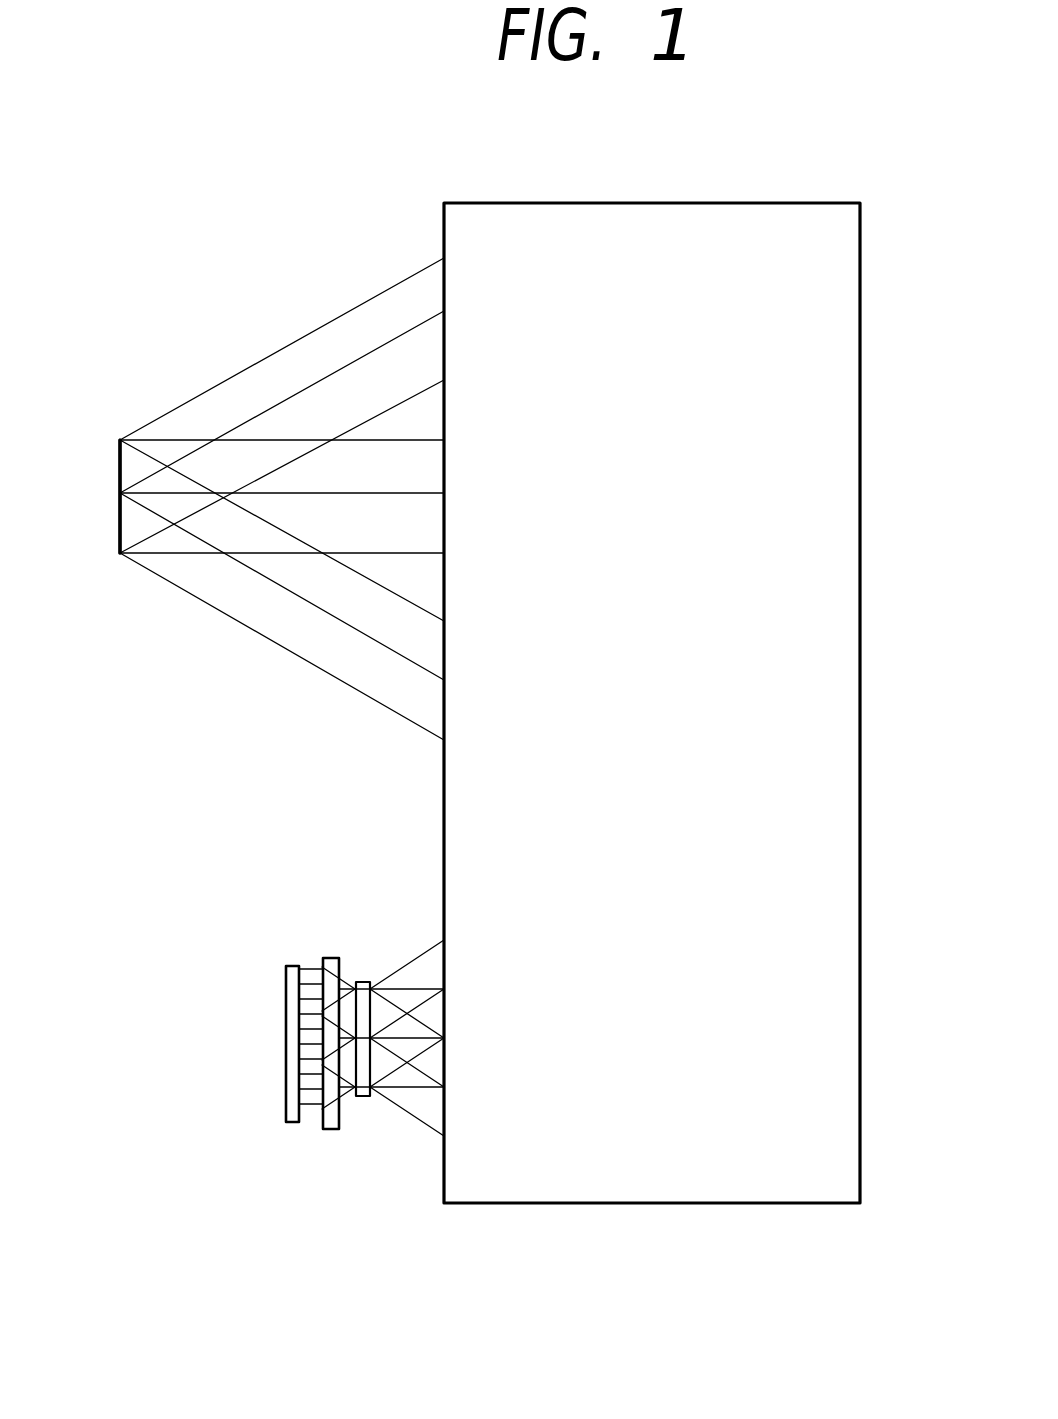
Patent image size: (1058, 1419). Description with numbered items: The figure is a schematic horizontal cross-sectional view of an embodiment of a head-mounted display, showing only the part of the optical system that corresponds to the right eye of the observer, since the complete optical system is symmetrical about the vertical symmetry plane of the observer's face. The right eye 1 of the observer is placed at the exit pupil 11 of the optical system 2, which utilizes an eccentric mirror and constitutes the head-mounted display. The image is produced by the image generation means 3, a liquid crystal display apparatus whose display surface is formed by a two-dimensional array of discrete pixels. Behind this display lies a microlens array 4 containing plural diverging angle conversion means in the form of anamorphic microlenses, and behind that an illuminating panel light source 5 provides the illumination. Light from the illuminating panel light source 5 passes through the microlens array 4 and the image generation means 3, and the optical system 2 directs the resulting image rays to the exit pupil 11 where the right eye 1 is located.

The right eye 1 is at (118, 532).
The exit pupil 11 is at (118, 453).
The optical system 2 is at (860, 266).
The image generation means 3 is at (365, 1097).
The microlens array 4 is at (329, 1130).
The illuminating panel light source 5 is at (290, 1123).